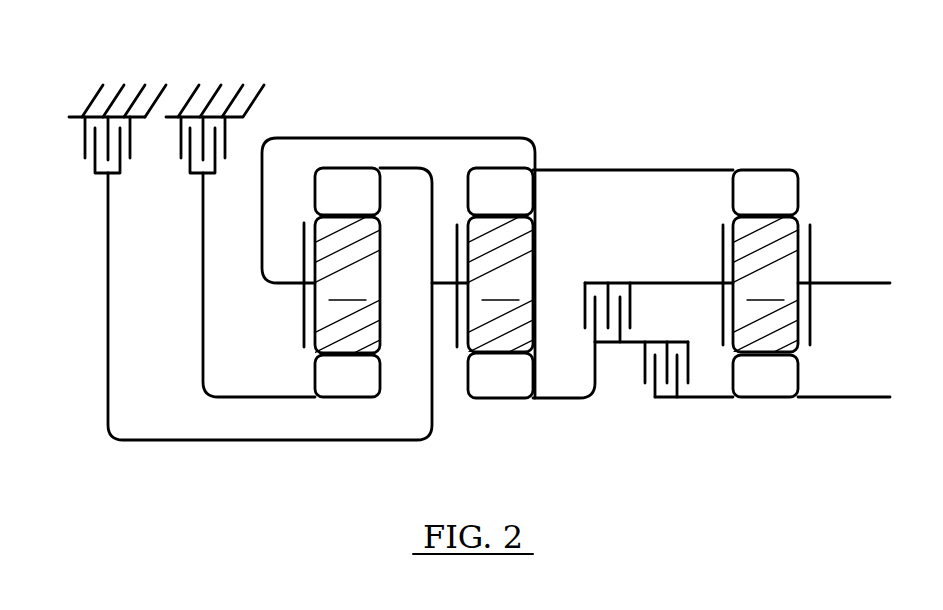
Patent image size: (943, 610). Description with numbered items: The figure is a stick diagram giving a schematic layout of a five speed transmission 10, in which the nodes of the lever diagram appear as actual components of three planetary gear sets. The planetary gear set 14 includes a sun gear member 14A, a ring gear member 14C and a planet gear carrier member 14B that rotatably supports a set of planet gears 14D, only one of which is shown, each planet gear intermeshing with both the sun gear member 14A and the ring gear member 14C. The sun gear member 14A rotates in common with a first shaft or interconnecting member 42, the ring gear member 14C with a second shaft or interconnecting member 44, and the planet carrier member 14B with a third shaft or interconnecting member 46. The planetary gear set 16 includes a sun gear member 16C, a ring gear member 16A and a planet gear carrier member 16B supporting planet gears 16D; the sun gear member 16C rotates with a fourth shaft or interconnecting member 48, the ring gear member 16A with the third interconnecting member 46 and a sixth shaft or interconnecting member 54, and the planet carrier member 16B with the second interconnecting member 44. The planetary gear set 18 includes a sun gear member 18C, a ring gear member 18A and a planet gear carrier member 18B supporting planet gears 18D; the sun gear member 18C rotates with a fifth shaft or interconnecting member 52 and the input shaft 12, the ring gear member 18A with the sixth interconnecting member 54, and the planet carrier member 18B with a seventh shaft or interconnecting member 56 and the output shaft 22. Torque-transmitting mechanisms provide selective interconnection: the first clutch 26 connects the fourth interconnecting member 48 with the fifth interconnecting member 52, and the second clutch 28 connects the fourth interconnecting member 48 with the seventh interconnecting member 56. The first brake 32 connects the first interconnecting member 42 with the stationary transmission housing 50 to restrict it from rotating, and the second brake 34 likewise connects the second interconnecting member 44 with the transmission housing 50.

The five speed transmission 10 is at (702, 68).
The input shaft 12 is at (863, 400).
The planetary gear set 14 is at (325, 270).
The sun gear member 14A is at (348, 382).
The planet gear carrier member 14B is at (300, 315).
The ring gear member 14C is at (355, 185).
The planet gears 14D is at (350, 290).
The planetary gear set 16 is at (485, 286).
The ring gear member 16A is at (502, 187).
The planet gear carrier member 16B is at (453, 235).
The sun gear member 16C is at (515, 380).
The planet gears 16D is at (503, 290).
The planetary gear set 18 is at (800, 267).
The ring gear member 18A is at (783, 185).
The planet gear carrier member 18B is at (810, 253).
The sun gear member 18C is at (760, 380).
The planet gears 18D is at (768, 290).
The output shaft 22 is at (853, 287).
The first clutch 26 is at (640, 373).
The second clutch 28 is at (585, 320).
The first brake 32 is at (180, 148).
The second brake 34 is at (83, 147).
The first shaft or interconnecting member 42 is at (203, 262).
The second shaft or interconnecting member 44 is at (212, 442).
The third shaft or interconnecting member 46 is at (467, 137).
The fourth shaft or interconnecting member 48 is at (557, 398).
The transmission housing 50 is at (153, 92).
The fifth shaft or interconnecting member 52 is at (718, 400).
The sixth shaft or interconnecting member 54 is at (663, 170).
The seventh shaft or interconnecting member 56 is at (663, 283).